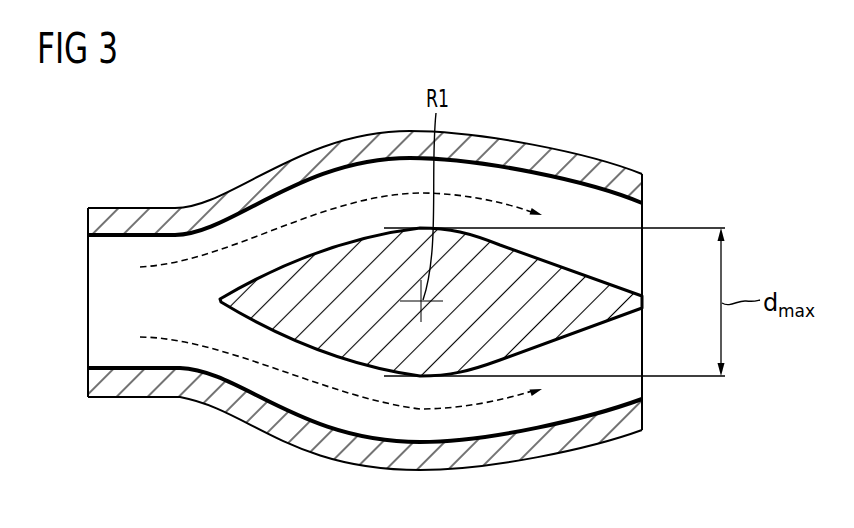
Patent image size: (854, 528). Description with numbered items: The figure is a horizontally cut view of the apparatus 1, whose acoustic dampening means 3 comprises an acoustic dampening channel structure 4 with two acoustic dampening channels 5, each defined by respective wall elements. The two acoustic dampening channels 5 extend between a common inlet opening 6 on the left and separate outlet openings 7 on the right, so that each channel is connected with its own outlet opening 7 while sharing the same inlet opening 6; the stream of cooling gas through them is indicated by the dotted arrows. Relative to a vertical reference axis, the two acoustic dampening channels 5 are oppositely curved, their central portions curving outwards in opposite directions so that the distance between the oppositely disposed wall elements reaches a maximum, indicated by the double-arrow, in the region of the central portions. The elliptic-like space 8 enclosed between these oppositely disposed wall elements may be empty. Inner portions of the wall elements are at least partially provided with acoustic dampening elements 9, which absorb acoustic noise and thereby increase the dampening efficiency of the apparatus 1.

The apparatus 1 is at (639, 101).
The acoustic dampening means 3 is at (589, 438).
The acoustic dampening channel structure 4 is at (525, 125).
The acoustic dampening channel 5 is at (334, 182).
The inlet opening 6 is at (112, 296).
The outlet opening 7 is at (628, 261).
The elliptic-like space 8 is at (318, 277).
The acoustic dampening element 9 is at (116, 236).